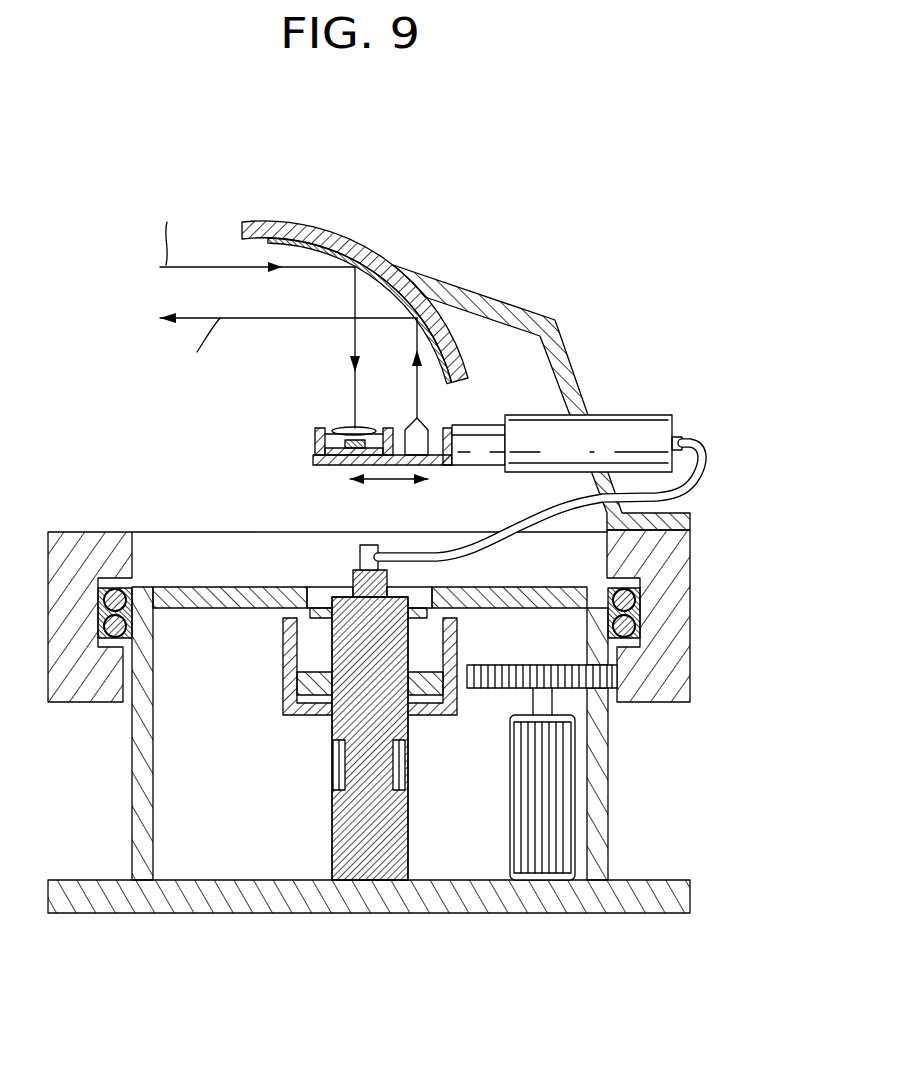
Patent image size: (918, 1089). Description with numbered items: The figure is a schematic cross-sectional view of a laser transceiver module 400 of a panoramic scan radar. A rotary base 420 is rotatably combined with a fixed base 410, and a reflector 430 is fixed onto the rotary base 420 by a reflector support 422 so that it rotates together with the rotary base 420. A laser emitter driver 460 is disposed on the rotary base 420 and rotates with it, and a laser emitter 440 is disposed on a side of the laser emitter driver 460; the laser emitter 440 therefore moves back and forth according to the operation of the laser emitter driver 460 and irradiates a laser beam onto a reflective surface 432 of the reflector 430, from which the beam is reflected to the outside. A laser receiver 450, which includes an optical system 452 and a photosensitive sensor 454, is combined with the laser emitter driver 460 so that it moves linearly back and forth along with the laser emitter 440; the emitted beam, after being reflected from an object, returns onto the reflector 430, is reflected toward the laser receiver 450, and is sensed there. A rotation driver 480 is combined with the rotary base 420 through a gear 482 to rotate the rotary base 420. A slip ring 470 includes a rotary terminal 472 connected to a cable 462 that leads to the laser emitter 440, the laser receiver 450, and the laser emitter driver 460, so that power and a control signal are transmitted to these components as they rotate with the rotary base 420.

The laser transceiver module 400 is at (596, 218).
The fixed base 410 is at (610, 766).
The rotary base 420 is at (680, 584).
The reflector support 422 is at (503, 300).
The reflector 430 is at (293, 222).
The reflective surface 432 is at (353, 242).
The laser emitter 440 is at (424, 422).
The laser receiver 450 is at (237, 382).
The optical system 452 is at (350, 430).
The photosensitive sensor 454 is at (325, 447).
The laser emitter driver 460 is at (643, 415).
The cable 462 is at (703, 477).
The slip ring 470 is at (350, 648).
The rotary terminal 472 is at (360, 556).
The rotation driver 480 is at (562, 822).
The gear 482 is at (617, 678).